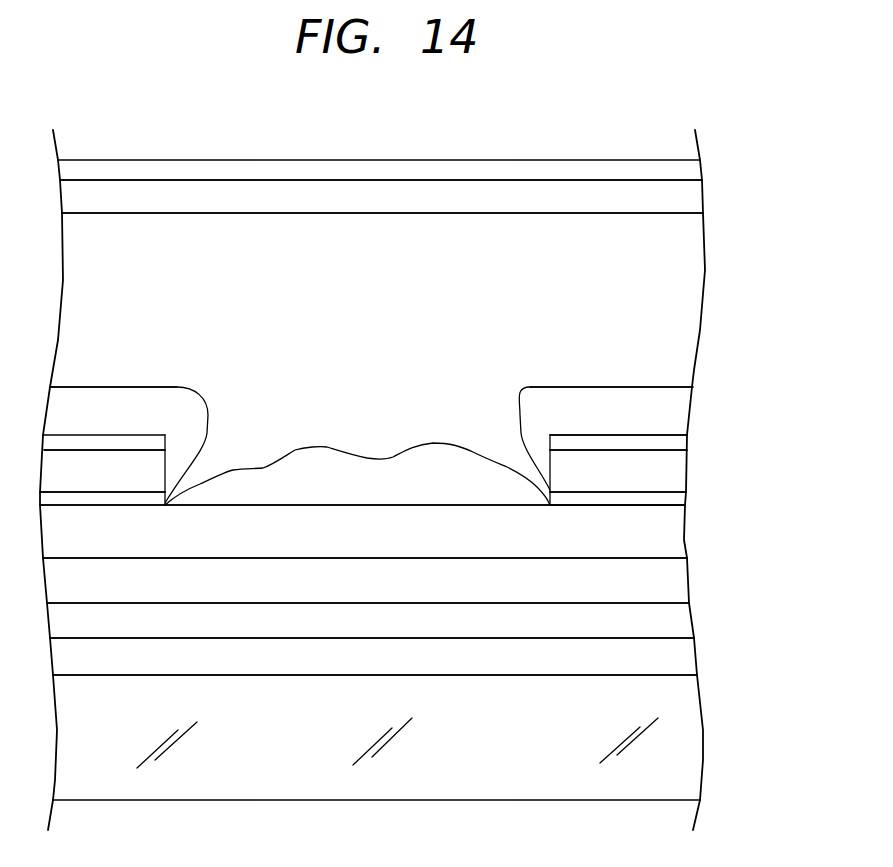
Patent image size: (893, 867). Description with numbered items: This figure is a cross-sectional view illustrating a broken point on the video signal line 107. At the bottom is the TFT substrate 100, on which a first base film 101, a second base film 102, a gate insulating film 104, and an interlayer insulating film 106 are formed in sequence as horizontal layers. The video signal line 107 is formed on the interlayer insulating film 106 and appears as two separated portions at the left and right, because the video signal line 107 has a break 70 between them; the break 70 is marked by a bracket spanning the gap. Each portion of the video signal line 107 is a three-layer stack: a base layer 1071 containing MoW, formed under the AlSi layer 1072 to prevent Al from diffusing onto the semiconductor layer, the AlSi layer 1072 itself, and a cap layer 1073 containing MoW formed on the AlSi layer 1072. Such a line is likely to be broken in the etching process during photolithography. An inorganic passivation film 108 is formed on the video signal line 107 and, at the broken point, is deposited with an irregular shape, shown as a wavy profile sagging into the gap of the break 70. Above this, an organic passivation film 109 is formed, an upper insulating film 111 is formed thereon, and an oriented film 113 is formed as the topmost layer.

The break 70 is at (522, 378).
The TFT substrate 100 is at (697, 752).
The first base film 101 is at (690, 657).
The second base film 102 is at (687, 622).
The gate insulating film 104 is at (683, 578).
The interlayer insulating film 106 is at (680, 538).
The video signal line 107 is at (761, 425).
The base layer 1071 is at (672, 497).
The AlSi layer 1072 is at (672, 468).
The cap layer 1073 is at (672, 440).
The inorganic passivation film 108 is at (685, 405).
The organic passivation film 109 is at (692, 330).
The upper insulating film 111 is at (692, 192).
The oriented film 113 is at (692, 170).